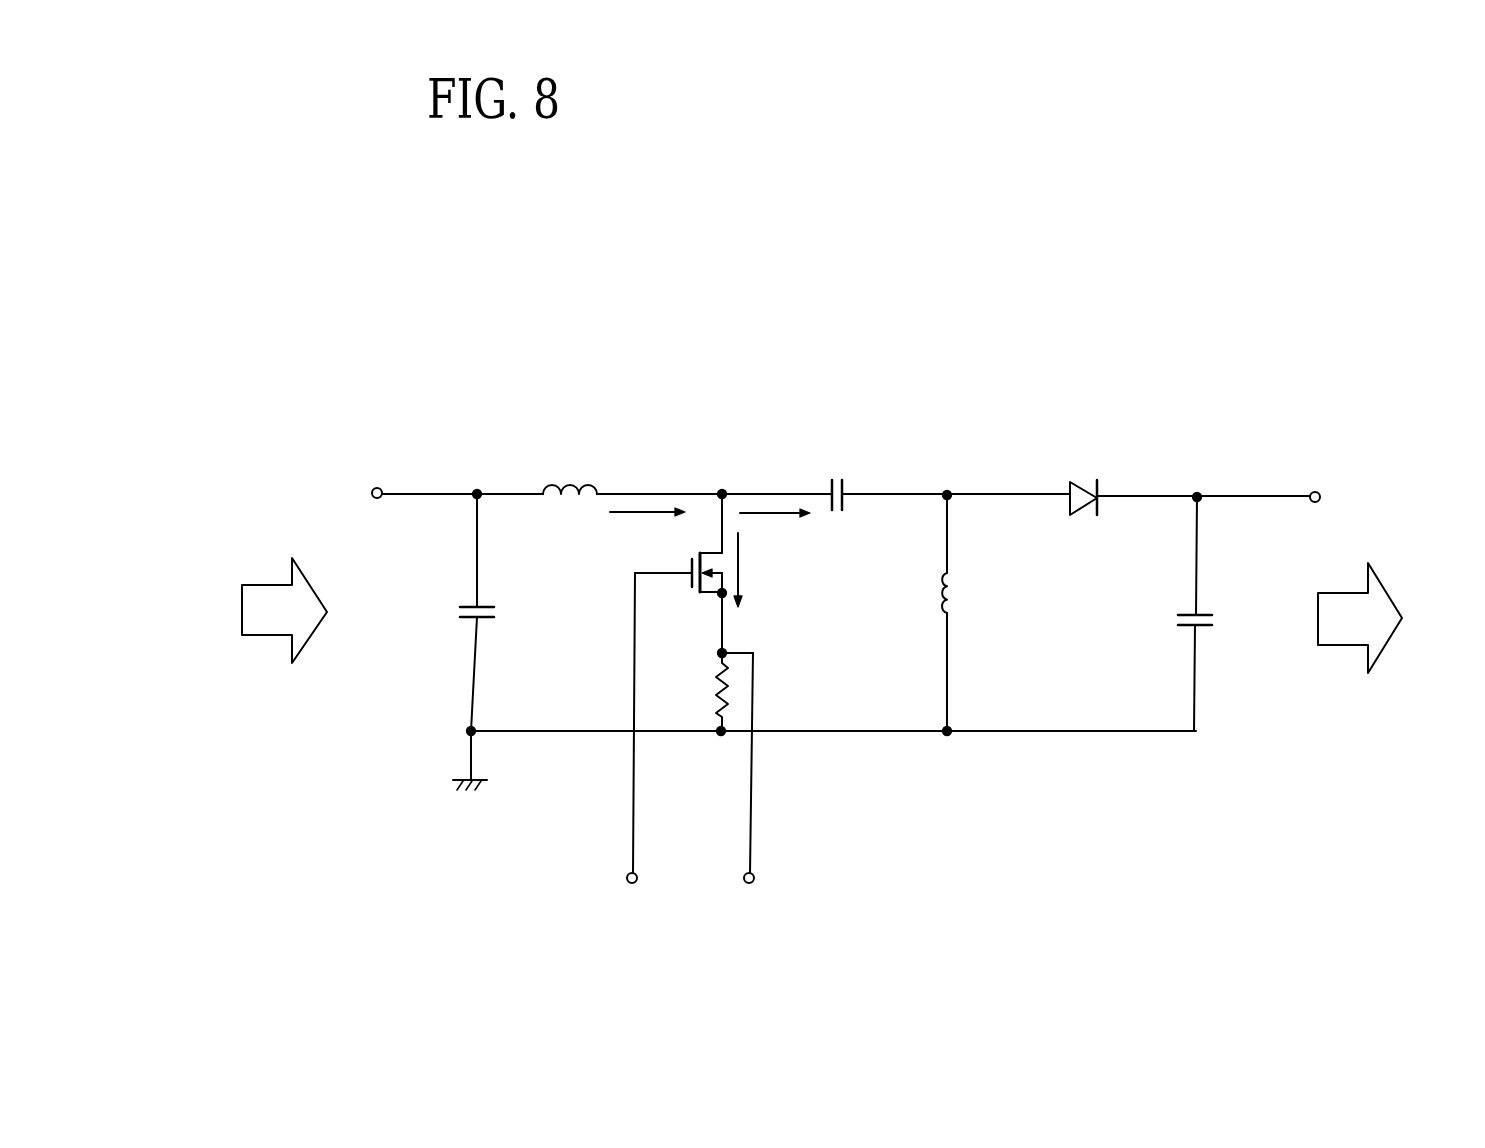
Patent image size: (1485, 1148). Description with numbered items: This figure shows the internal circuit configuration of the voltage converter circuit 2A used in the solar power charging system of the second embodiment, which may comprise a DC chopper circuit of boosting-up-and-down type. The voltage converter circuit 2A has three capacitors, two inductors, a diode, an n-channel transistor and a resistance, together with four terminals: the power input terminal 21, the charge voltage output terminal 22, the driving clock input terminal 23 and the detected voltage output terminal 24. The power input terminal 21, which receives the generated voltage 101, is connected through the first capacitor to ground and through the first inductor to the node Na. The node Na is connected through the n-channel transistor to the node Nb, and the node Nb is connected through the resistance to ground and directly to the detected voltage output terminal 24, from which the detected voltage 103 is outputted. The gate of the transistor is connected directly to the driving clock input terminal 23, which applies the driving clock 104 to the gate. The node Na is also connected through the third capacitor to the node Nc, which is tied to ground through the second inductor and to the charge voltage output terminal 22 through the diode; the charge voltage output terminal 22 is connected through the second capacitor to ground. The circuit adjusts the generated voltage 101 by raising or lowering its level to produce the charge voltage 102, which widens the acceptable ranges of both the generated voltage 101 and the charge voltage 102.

The voltage converter circuit 2A is at (1063, 328).
The power input terminal 21 is at (377, 487).
The charge voltage output terminal 22 is at (1315, 491).
The driving clock input terminal 23 is at (640, 880).
The detected voltage output terminal 24 is at (758, 878).
The generated voltage 101 is at (272, 595).
The charge voltage 102 is at (1348, 600).
The detected voltage 103 is at (753, 782).
The driving clock 104 is at (630, 790).